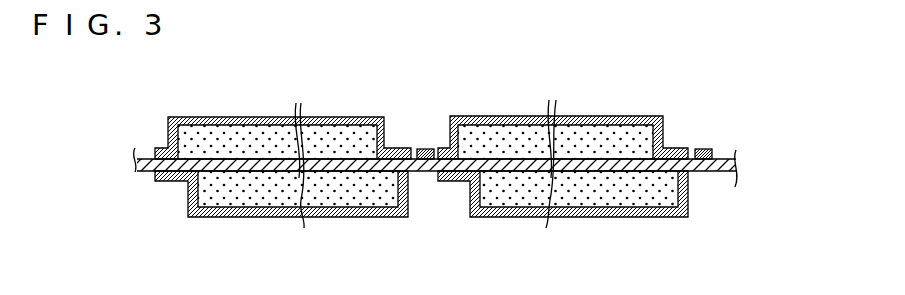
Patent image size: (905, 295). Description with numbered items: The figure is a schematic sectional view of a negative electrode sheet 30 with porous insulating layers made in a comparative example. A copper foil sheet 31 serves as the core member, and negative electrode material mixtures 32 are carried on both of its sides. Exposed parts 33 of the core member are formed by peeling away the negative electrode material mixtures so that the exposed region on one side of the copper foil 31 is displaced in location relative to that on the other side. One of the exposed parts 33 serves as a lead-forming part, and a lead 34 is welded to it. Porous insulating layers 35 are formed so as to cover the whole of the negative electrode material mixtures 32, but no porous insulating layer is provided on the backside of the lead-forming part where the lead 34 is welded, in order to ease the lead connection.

The negative electrode sheet 30 is at (634, 98).
The copper foil sheet 31 is at (137, 172).
The negative electrode material mixture 32 is at (334, 133).
The exposed part of the core member 33 is at (725, 158).
The lead 34 is at (424, 149).
The porous insulating layer 35 is at (232, 117).